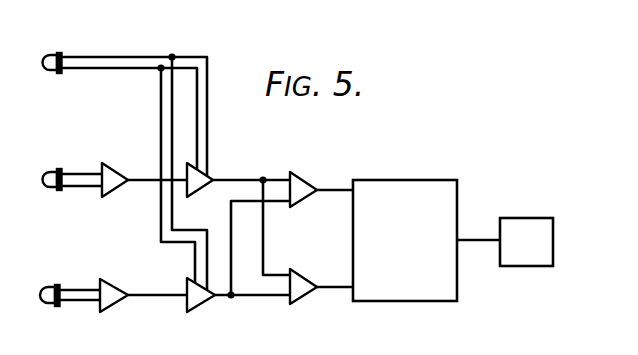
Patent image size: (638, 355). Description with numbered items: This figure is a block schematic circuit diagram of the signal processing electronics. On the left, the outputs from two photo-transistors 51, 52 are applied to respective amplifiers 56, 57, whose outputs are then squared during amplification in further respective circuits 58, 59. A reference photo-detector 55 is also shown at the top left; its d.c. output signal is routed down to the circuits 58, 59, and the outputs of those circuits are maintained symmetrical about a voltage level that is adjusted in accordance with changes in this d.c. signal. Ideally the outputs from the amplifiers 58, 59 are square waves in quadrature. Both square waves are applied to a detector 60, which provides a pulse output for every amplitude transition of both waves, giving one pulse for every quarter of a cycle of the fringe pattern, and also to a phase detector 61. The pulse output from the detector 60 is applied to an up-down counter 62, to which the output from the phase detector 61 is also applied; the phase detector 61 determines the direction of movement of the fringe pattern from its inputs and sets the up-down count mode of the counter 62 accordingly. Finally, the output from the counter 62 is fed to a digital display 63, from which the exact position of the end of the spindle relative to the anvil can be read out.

The photo-transistor 51 is at (47, 173).
The photo-transistor 52 is at (45, 290).
The reference photo-detector 55 is at (54, 56).
The amplifier 56 is at (114, 190).
The amplifier 57 is at (109, 291).
The squaring circuit 58 is at (203, 173).
The squaring circuit 59 is at (200, 300).
The detector 60 is at (305, 186).
The phase detector 61 is at (303, 283).
The up-down counter 62 is at (419, 256).
The digital display 63 is at (538, 256).